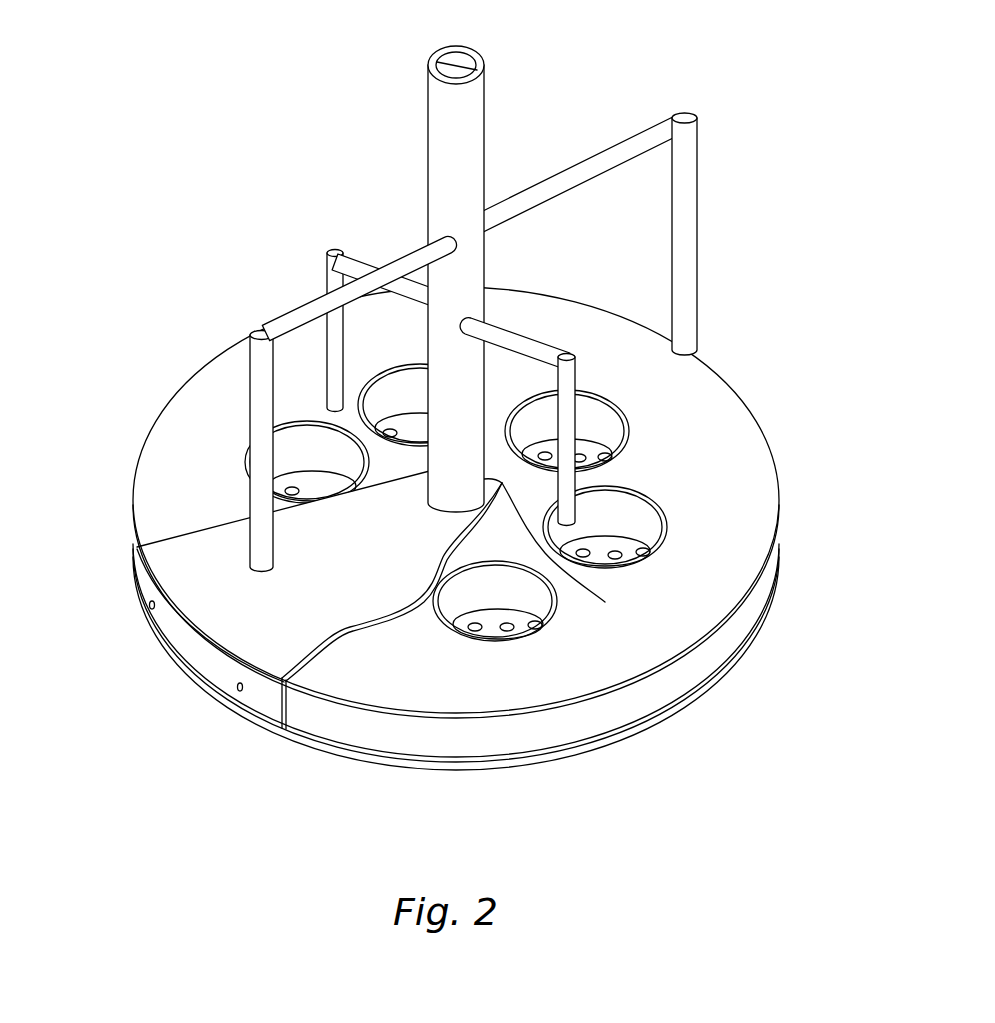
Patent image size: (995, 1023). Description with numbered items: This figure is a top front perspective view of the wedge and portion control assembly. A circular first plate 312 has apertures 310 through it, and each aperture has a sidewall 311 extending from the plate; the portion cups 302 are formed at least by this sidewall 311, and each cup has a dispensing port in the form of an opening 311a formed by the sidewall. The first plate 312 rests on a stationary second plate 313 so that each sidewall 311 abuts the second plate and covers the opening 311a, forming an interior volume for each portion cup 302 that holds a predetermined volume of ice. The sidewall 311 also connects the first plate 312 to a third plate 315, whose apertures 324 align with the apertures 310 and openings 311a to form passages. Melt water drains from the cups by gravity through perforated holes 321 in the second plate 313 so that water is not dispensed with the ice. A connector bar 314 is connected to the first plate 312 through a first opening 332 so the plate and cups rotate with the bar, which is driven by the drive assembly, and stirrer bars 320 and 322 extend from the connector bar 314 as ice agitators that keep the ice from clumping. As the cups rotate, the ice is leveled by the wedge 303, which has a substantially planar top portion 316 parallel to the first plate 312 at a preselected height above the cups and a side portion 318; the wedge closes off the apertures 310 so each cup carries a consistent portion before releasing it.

The portion cups 302 is at (667, 522).
The wedge 303 is at (124, 644).
The apertures 310 is at (620, 407).
The sidewall 311 is at (716, 490).
The opening 311a is at (632, 548).
The first plate 312 is at (773, 452).
The second plate 313 is at (781, 563).
The connector bar 314 is at (483, 110).
The third plate 315 is at (716, 636).
The top portion 316 is at (237, 609).
The side portion 318 is at (265, 685).
The stirrer bar 320 is at (694, 180).
The perforated holes 321 is at (460, 632).
The stirrer bar 322 is at (514, 342).
The apertures 324 is at (578, 690).
The first opening 332 is at (464, 580).